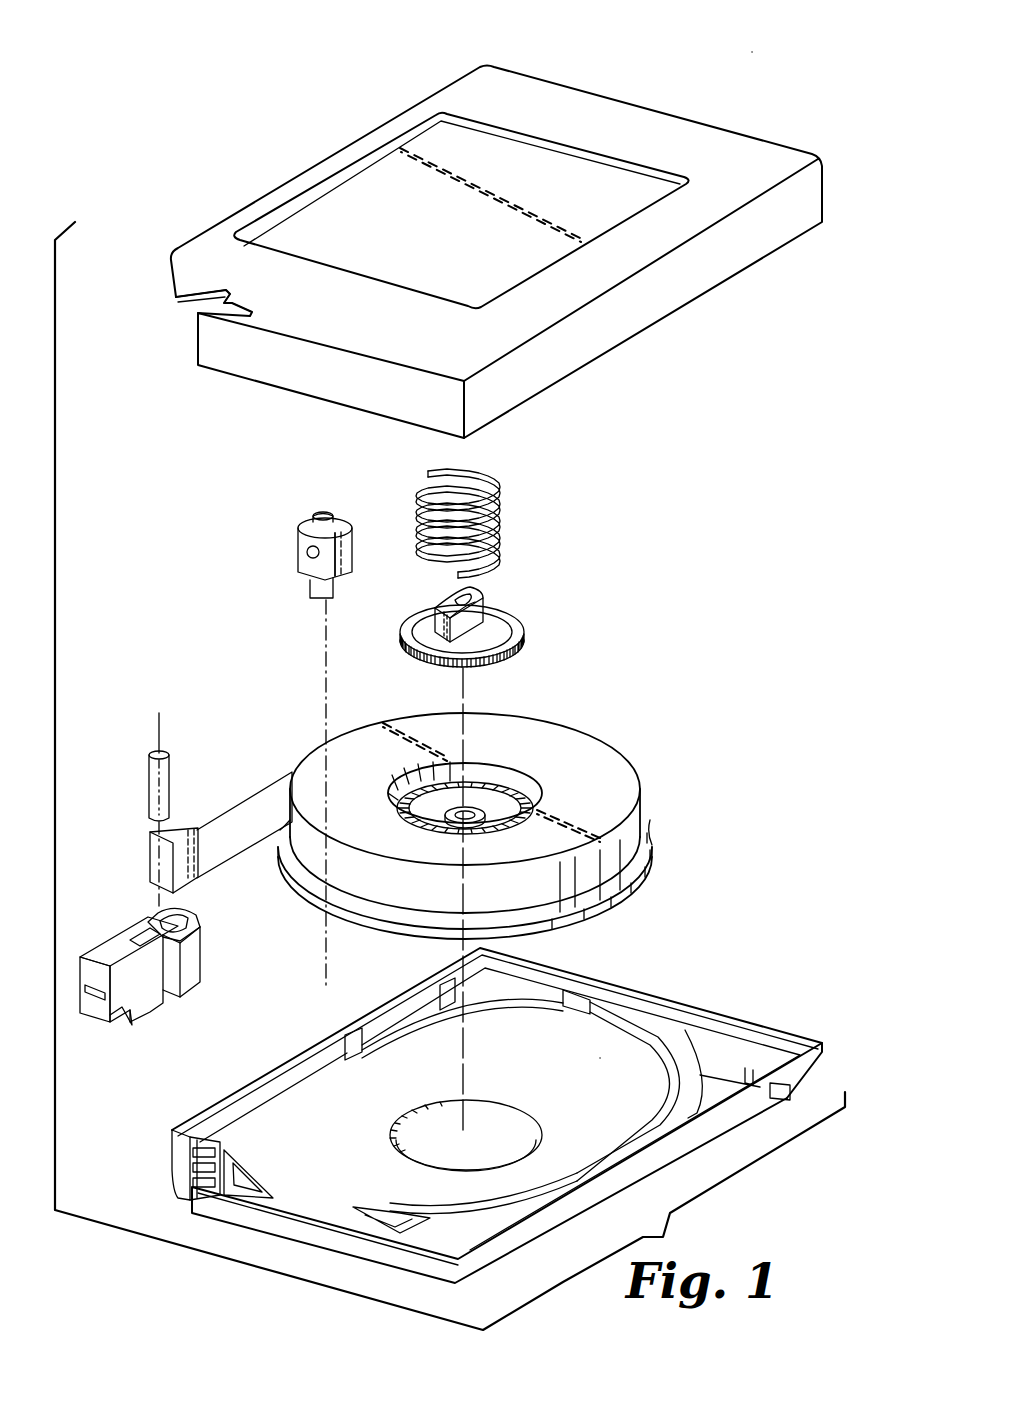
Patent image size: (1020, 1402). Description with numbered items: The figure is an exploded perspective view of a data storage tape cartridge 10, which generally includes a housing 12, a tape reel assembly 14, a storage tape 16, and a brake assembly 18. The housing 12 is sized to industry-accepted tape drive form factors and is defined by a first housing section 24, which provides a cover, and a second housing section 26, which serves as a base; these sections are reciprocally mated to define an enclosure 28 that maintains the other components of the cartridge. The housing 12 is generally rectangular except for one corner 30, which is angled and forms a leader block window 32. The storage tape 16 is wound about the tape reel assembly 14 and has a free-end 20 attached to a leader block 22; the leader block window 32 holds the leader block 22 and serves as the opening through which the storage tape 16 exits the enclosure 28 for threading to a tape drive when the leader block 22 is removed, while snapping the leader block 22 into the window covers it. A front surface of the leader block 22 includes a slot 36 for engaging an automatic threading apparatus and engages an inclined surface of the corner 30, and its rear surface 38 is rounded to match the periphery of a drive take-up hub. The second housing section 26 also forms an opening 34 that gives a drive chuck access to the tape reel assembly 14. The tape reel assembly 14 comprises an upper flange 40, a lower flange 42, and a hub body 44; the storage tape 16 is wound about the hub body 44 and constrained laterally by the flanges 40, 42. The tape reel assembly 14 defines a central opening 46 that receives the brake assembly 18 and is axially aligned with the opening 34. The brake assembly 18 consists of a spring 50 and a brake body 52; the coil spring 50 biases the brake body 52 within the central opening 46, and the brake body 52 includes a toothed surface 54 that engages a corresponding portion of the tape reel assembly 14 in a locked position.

The data storage tape cartridge 10 is at (752, 52).
The housing 12 is at (780, 133).
The tape reel assembly 14 is at (578, 735).
The storage tape 16 is at (263, 808).
The brake assembly 18 is at (588, 530).
The free-end 20 is at (160, 858).
The leader block 22 is at (200, 944).
The first housing section 24 is at (622, 122).
The second housing section 26 is at (735, 1003).
The enclosure 28 is at (600, 1058).
The corner 30 is at (170, 277).
The leader block window 32 is at (183, 1175).
The opening 34 is at (512, 1105).
The slot 36 is at (122, 1018).
The rear surface 38 is at (192, 918).
The upper flange 40 is at (613, 762).
The lower flange 42 is at (628, 853).
The hub body 44 is at (502, 768).
The central opening 46 is at (416, 779).
The spring 50 is at (500, 478).
The brake body 52 is at (493, 636).
The toothed surface 54 is at (447, 668).